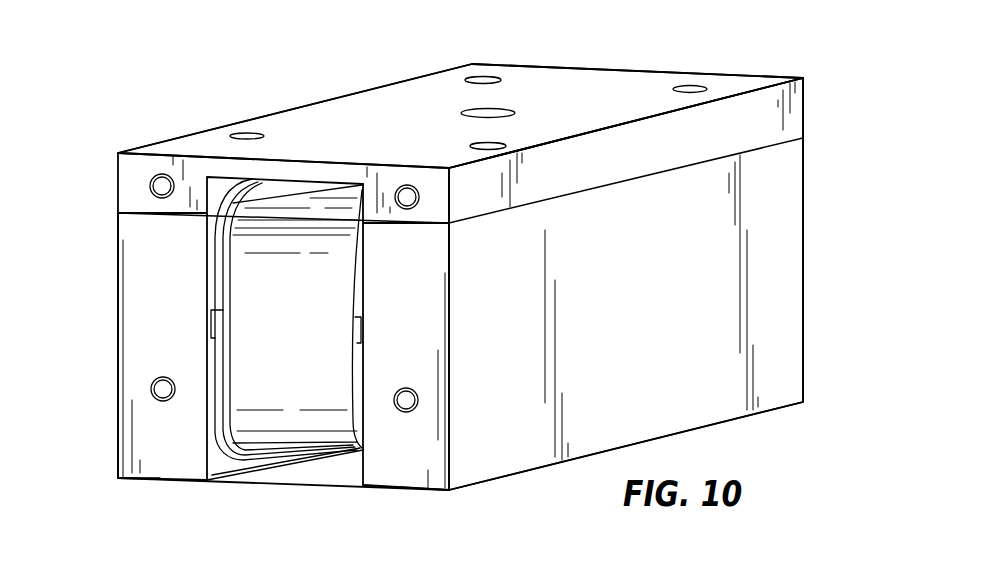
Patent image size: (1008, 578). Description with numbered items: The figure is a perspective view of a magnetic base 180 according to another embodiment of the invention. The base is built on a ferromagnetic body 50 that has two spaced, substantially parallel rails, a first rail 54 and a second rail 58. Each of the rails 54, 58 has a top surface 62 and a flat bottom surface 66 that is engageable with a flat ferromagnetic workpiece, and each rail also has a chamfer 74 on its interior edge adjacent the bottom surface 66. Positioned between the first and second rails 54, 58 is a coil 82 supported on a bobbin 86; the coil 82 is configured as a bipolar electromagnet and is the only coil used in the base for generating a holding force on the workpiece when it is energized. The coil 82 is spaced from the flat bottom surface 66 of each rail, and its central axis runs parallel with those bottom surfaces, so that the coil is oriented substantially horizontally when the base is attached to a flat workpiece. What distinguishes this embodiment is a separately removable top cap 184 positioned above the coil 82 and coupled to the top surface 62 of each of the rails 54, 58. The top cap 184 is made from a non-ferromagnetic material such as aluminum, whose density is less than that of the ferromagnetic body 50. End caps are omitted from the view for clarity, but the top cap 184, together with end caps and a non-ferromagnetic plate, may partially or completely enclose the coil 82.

The magnetic base 180 is at (151, 108).
The top cap 184 is at (760, 113).
The ferromagnetic body 50 is at (777, 286).
The top surface 62 is at (143, 210).
The first rail 54 is at (155, 308).
The second rail 58 is at (412, 330).
The bobbin 86 is at (213, 253).
The coil 82 is at (313, 433).
The chamfer 74 is at (206, 482).
The bottom surface 66 is at (148, 478).